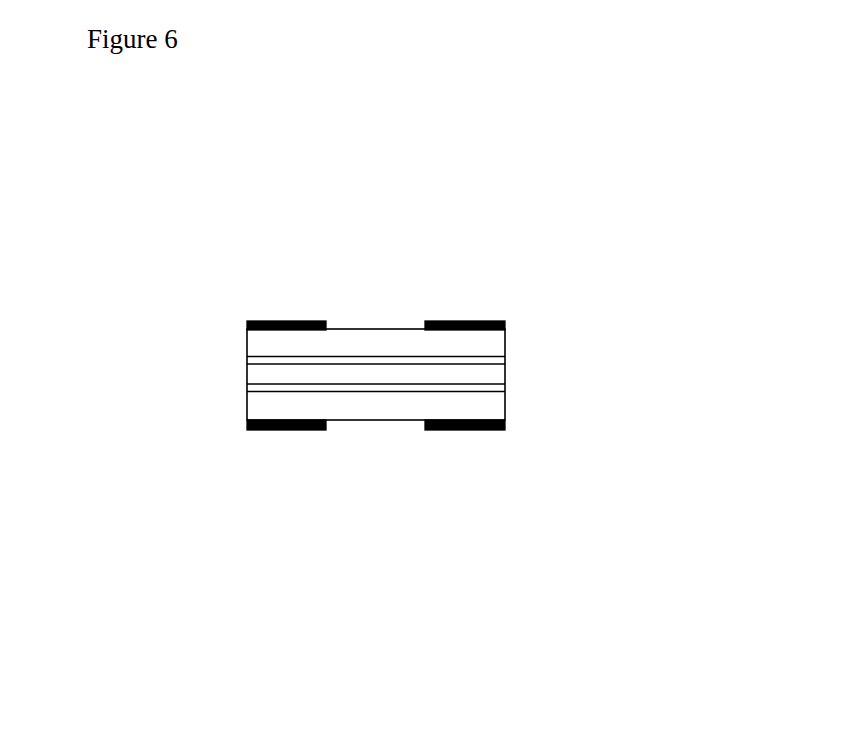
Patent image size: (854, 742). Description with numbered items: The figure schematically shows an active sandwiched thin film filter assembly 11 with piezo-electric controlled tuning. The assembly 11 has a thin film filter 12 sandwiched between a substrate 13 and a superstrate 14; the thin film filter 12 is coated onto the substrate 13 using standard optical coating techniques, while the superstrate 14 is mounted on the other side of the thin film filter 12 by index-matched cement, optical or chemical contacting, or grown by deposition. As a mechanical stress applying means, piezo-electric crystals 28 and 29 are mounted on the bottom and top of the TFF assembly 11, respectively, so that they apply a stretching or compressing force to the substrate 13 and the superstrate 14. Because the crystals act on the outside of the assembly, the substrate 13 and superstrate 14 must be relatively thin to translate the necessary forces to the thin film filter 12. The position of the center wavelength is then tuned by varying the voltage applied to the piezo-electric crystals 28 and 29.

The sandwiched thin film filter assembly 11 is at (585, 245).
The thin film filter 12 is at (269, 365).
The substrate 13 is at (490, 407).
The superstrate 14 is at (357, 342).
The piezo-electric crystal 28 is at (290, 432).
The piezo-electric crystal 29 is at (313, 322).